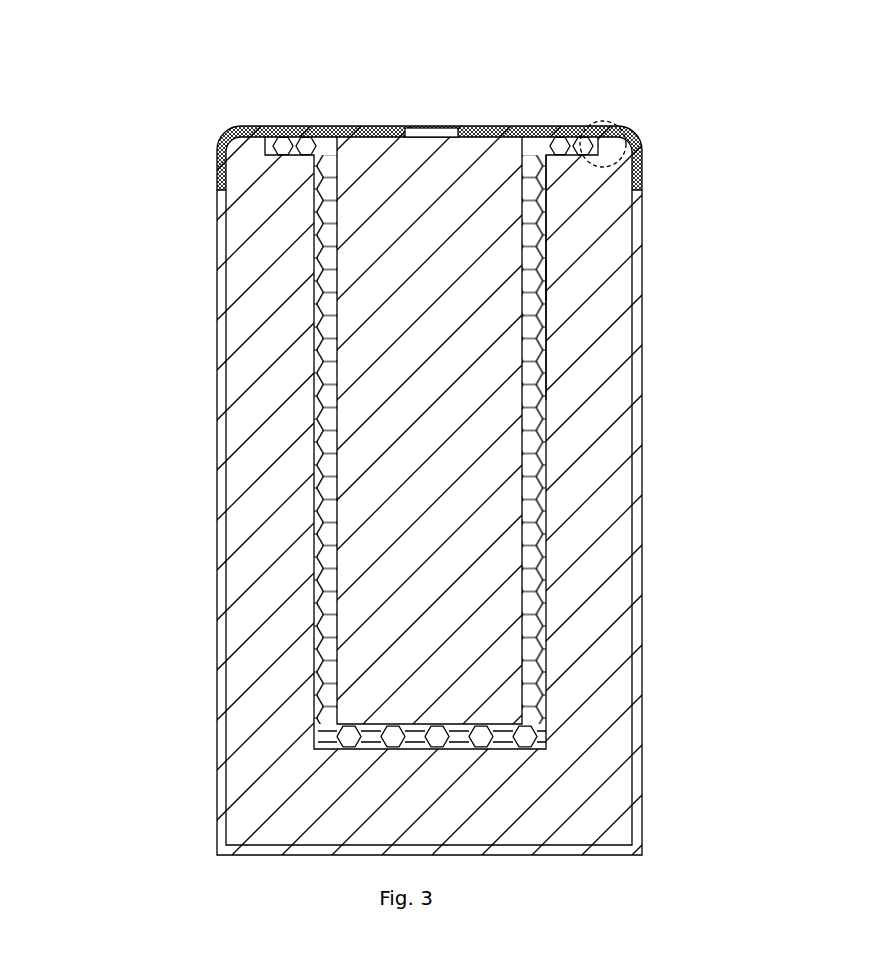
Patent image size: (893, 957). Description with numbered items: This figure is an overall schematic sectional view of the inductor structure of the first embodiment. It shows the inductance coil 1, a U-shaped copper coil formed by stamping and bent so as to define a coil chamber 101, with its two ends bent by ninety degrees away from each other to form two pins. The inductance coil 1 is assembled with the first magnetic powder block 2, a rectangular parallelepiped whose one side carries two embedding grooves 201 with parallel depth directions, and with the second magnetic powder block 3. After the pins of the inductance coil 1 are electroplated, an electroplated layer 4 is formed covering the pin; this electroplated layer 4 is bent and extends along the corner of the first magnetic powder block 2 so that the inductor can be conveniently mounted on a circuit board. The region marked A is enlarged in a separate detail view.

The inductance coil 1 is at (325, 440).
The first magnetic powder block 2 is at (250, 305).
The second magnetic powder block 3 is at (380, 245).
The electroplated layer 4 is at (305, 127).
The coil chamber 101 is at (547, 242).
The embedding groove 201 is at (548, 292).
The detail region A is at (603, 115).